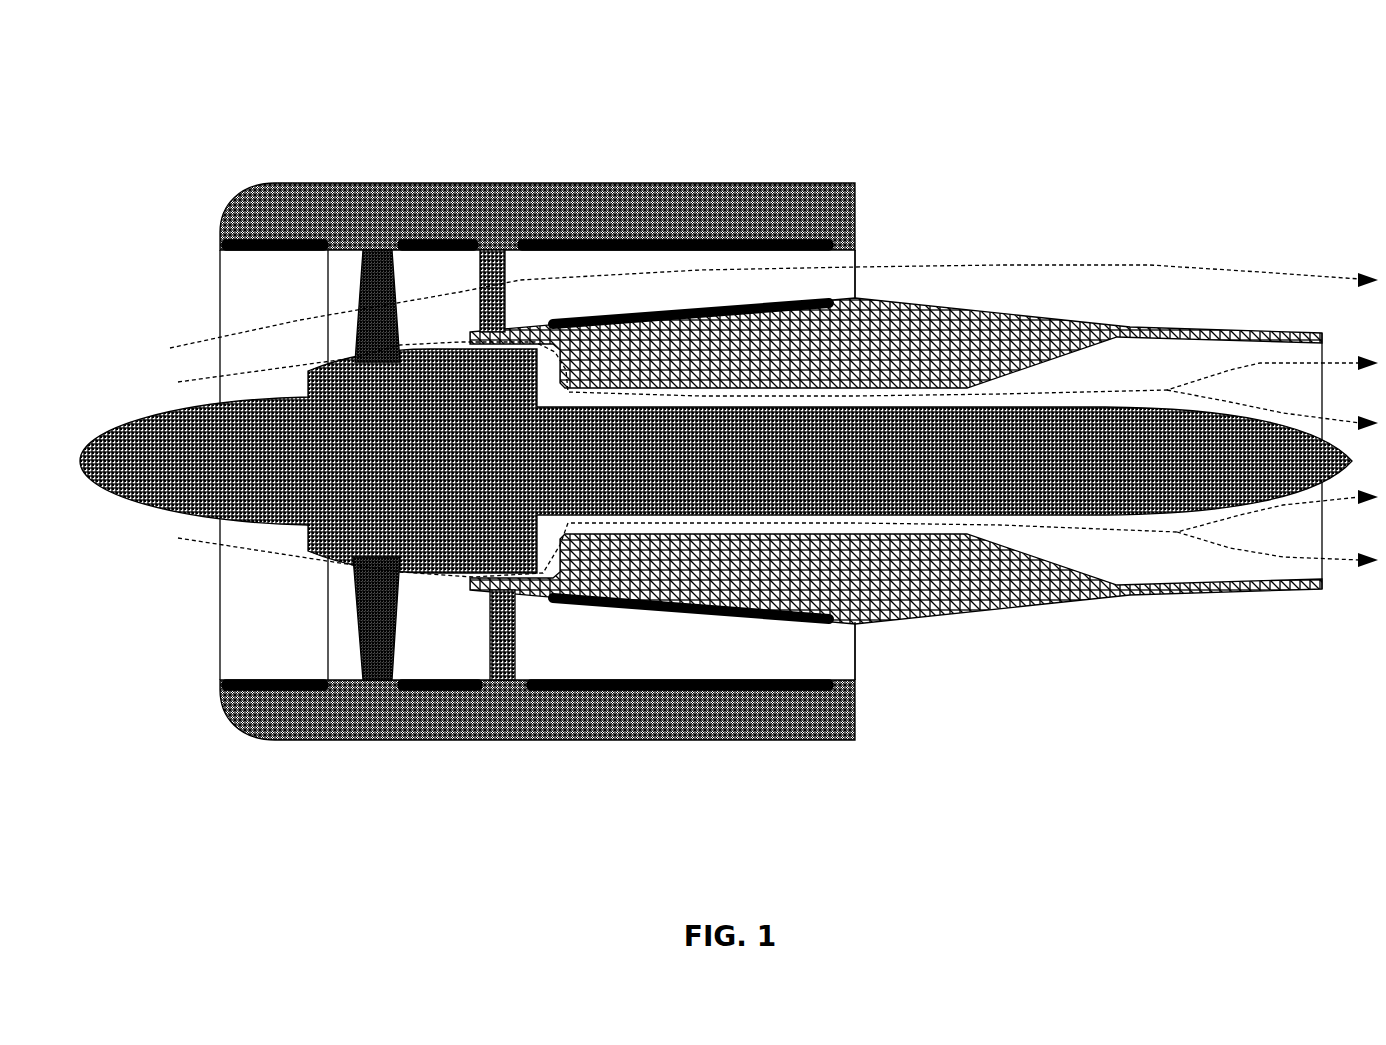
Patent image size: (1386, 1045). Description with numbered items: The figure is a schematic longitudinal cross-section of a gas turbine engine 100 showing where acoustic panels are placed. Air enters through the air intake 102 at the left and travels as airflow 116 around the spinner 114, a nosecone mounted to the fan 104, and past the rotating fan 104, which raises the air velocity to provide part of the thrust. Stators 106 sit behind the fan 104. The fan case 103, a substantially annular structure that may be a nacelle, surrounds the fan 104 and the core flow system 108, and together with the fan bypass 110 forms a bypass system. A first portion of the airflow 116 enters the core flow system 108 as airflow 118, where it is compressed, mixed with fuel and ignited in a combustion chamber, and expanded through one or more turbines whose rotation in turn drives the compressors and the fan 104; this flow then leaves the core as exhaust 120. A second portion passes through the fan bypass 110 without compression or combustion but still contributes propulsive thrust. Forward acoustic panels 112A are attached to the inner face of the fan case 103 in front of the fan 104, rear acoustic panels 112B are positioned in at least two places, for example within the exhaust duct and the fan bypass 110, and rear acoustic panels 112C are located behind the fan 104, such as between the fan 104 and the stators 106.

The gas turbine engine 100 is at (195, 68).
The air intake 102 is at (265, 291).
The fan case 103 is at (585, 183).
The fan 104 is at (380, 250).
The stators 106 is at (505, 250).
The core flow system 108 is at (1107, 403).
The fan bypass 110 is at (857, 265).
The forward acoustic panels 112A is at (272, 240).
The rear acoustic panels 112B is at (783, 297).
The rear acoustic panels 112C is at (434, 240).
The spinner 114 is at (140, 415).
The airflow 116 is at (202, 337).
The airflow 118 is at (1045, 392).
The exhaust 120 is at (1293, 415).